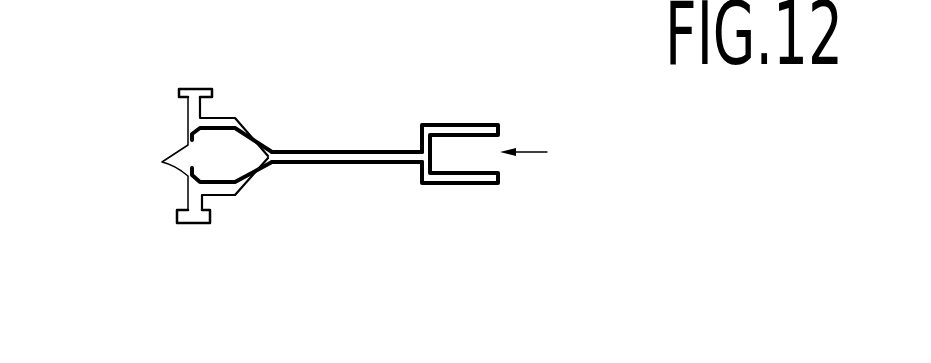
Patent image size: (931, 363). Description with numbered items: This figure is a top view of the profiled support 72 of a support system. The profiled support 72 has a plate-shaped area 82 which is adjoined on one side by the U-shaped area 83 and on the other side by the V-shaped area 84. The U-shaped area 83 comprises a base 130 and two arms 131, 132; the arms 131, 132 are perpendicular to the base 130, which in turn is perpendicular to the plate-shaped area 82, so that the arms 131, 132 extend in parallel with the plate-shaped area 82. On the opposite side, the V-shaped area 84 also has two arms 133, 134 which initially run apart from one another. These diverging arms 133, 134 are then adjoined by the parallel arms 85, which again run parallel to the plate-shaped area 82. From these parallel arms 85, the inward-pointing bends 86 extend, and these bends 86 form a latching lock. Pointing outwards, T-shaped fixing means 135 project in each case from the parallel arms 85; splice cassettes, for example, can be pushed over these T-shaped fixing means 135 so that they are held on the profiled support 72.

The profiled support 72 is at (556, 72).
The plate-shaped area 82 is at (348, 157).
The U-shaped area 83 is at (539, 151).
The V-shaped area 84 is at (300, 122).
The parallel arms 85 is at (223, 121).
The inward-pointing bends 86 is at (157, 153).
The base 130 is at (425, 136).
The arm 131 is at (480, 175).
The arm 132 is at (483, 124).
The arm 133 is at (257, 173).
The arm 134 is at (257, 133).
The T-shaped fixing means 135 is at (188, 110).